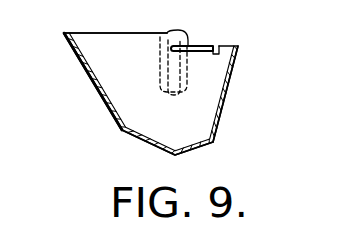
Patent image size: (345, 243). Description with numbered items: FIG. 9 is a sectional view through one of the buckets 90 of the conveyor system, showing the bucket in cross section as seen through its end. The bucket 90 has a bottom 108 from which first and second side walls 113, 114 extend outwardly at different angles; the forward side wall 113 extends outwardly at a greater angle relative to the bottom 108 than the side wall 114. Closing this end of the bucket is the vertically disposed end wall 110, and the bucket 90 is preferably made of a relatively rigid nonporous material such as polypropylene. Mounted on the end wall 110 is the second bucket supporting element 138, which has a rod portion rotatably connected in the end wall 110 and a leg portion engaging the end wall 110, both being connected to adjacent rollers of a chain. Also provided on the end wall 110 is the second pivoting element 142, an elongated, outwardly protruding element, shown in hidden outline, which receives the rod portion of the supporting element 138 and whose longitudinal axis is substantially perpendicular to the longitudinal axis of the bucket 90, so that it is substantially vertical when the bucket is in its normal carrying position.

The bucket 90 is at (226, 126).
The bottom 108 is at (165, 148).
The first end wall 110 is at (105, 47).
The first side wall 113 is at (94, 85).
The second side wall 114 is at (230, 95).
The second bucket supporting element 138 is at (198, 46).
The second element 142 is at (163, 57).